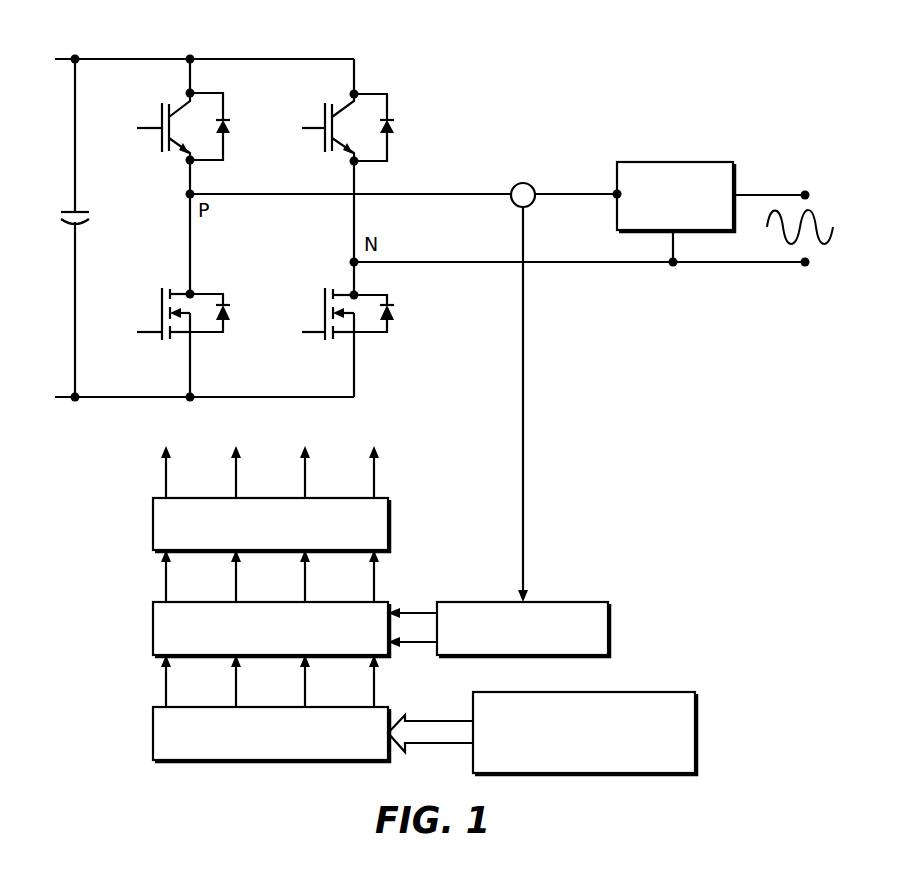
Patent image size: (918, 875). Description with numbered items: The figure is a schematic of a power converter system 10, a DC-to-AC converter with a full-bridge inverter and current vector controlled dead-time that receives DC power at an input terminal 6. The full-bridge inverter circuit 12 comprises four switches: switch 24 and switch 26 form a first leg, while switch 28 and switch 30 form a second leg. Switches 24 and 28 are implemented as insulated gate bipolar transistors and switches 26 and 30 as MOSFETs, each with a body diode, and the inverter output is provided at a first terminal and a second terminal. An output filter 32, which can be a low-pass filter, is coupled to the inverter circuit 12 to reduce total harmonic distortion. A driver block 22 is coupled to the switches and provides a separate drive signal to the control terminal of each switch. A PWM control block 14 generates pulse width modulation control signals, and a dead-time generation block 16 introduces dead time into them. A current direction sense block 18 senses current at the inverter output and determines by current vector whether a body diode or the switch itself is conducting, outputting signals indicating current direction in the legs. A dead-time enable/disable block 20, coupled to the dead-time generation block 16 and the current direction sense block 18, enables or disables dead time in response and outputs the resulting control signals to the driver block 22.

The input terminal 6 is at (75, 140).
The power converter system 10 is at (732, 98).
The full-bridge inverter circuit 12 is at (356, 70).
The PWM control block 14 is at (615, 692).
The dead-time generation block 16 is at (153, 735).
The current direction sense block 18 is at (778, 231).
The dead-time enable/disable block 20 is at (153, 633).
The driver block 22 is at (153, 530).
The switch 24 is at (162, 108).
The switch 26 is at (162, 291).
The switch 28 is at (325, 108).
The switch 30 is at (325, 291).
The output filter 32 is at (674, 162).